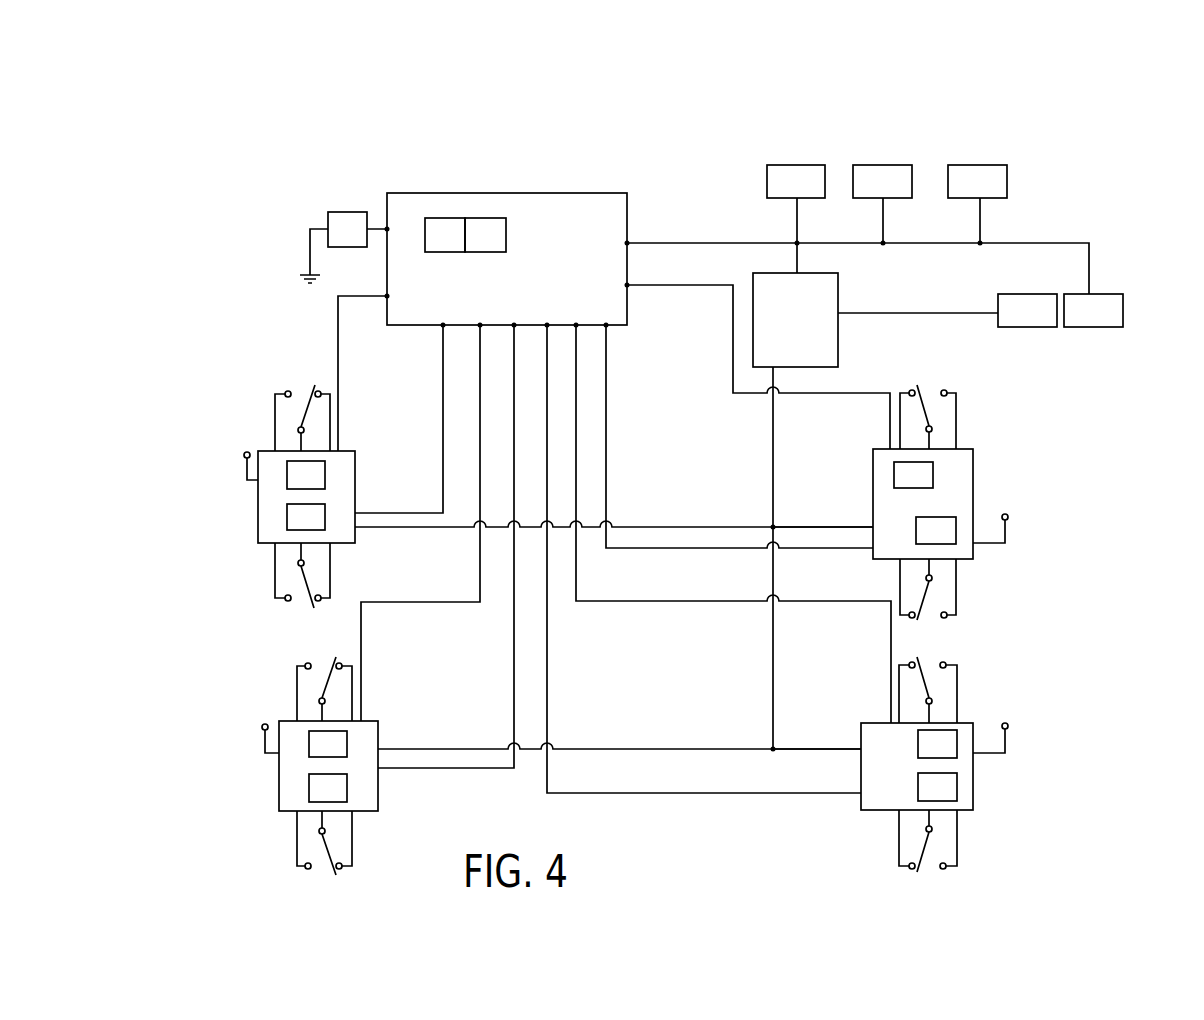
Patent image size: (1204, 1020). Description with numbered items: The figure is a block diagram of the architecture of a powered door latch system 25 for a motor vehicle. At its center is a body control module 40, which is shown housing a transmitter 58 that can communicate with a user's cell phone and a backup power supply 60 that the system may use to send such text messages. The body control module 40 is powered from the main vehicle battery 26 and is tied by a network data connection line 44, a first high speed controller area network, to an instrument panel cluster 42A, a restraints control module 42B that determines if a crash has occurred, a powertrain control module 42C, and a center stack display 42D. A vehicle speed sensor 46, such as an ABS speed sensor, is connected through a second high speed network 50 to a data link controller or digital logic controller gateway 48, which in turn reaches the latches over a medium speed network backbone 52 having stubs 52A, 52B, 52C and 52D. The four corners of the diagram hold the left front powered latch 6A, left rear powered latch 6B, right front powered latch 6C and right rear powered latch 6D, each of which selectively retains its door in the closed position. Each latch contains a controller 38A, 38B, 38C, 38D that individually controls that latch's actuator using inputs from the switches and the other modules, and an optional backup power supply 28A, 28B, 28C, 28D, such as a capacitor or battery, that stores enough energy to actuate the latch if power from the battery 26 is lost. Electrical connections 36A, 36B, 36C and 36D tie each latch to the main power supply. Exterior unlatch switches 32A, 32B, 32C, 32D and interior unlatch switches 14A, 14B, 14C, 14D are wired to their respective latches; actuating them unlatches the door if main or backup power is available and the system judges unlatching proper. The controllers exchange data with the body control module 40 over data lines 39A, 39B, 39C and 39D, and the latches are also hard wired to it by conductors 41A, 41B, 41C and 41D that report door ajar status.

The powered latch system 25 is at (670, 89).
The battery 26 is at (345, 220).
The body control module 40 is at (538, 193).
The transmitter 58 is at (452, 228).
The backup power supply 60 is at (478, 230).
The instrument panel cluster 42A is at (802, 172).
The restraints control module 42B is at (893, 170).
The powertrain control module 42C is at (990, 172).
The center stack display 42D is at (1105, 294).
The network data connection line 44 is at (1071, 238).
The vehicle speed sensor 46 is at (1030, 325).
The data link controller 48 is at (828, 290).
The network 50 is at (925, 301).
The network backbone 52 is at (766, 667).
The stub 52A is at (683, 528).
The stub 52B is at (398, 748).
The stub 52C is at (840, 525).
The stub 52D is at (805, 748).
The data line 39A is at (338, 366).
The data line 39B is at (405, 605).
The data line 39C is at (797, 395).
The data line 39D is at (715, 602).
The conductor/wire 41A is at (377, 516).
The conductor/wire 41B is at (400, 770).
The conductor/wire 41C is at (630, 550).
The conductor/wire 41D is at (700, 793).
The left front powered latch 6A is at (254, 508).
The left rear powered latch 6B is at (276, 775).
The right front powered latch 6C is at (976, 487).
The rear powered latch 6D is at (976, 772).
The exterior unlatch switch 32A is at (300, 396).
The exterior unlatch switch 32B is at (325, 665).
The exterior unlatch switch 32C is at (922, 392).
The exterior unlatch switch 32D is at (930, 661).
The interior unlatch switch 14A is at (300, 596).
The interior unlatch switch 14B is at (322, 866).
The interior unlatch switch 14C is at (930, 616).
The interior unlatch switch 14D is at (930, 870).
The electrical connection 36A is at (245, 452).
The electrical connection 36B is at (264, 724).
The electrical connection 36C is at (1007, 516).
The electrical connection 36D is at (1008, 727).
The controller 38A is at (287, 477).
The controller 38B is at (310, 740).
The controller 38C is at (925, 475).
The controller 38D is at (958, 730).
The backup power supply 28A is at (290, 518).
The backup power supply 28B is at (310, 788).
The backup power supply 28C is at (955, 545).
The backup power supply 28D is at (958, 788).